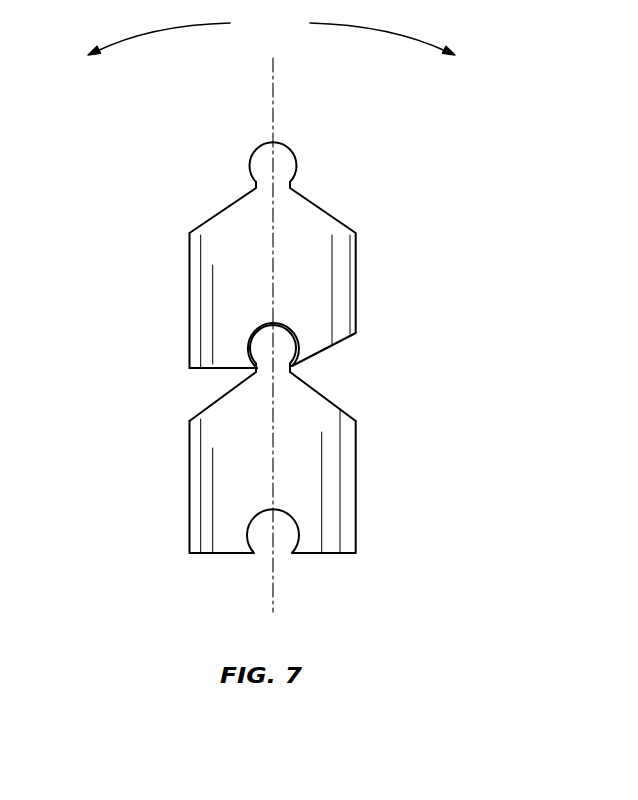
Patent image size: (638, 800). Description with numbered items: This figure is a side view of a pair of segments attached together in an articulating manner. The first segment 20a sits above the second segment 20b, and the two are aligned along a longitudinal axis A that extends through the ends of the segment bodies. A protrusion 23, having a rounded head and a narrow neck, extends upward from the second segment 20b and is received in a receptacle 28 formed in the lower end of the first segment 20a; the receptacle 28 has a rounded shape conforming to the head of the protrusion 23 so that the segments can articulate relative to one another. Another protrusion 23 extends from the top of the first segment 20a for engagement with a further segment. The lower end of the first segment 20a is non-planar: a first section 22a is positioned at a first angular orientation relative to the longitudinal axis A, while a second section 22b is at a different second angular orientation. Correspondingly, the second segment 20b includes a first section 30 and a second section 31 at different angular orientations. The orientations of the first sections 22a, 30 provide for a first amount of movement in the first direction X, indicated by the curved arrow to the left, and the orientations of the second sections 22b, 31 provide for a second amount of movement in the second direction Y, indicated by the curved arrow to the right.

The first segment 20a is at (225, 282).
The second segment 20b is at (223, 442).
The first section 22a is at (224, 369).
The second section 22b is at (343, 342).
The protrusion 23 is at (283, 160).
The receptacle 28 is at (300, 344).
The first section 30 is at (214, 402).
The second section 31 is at (332, 403).
The longitudinal axis A is at (274, 80).
The first direction X is at (142, 46).
The second direction Y is at (394, 48).